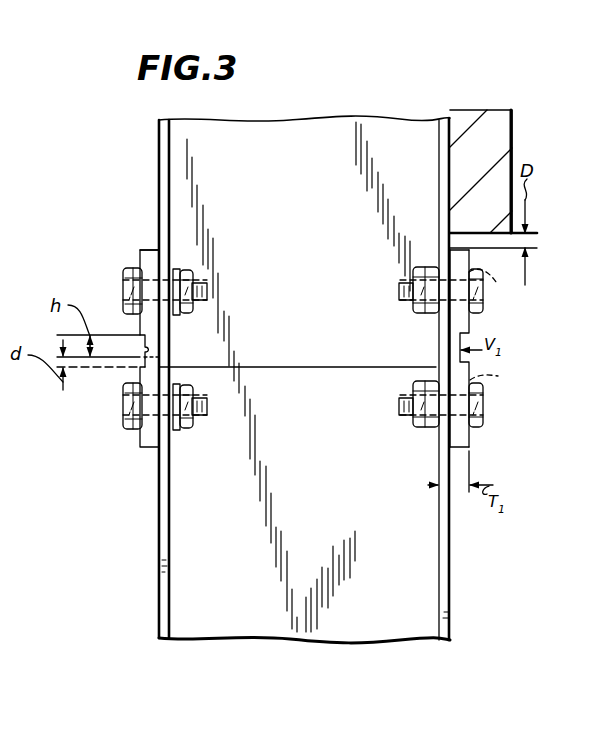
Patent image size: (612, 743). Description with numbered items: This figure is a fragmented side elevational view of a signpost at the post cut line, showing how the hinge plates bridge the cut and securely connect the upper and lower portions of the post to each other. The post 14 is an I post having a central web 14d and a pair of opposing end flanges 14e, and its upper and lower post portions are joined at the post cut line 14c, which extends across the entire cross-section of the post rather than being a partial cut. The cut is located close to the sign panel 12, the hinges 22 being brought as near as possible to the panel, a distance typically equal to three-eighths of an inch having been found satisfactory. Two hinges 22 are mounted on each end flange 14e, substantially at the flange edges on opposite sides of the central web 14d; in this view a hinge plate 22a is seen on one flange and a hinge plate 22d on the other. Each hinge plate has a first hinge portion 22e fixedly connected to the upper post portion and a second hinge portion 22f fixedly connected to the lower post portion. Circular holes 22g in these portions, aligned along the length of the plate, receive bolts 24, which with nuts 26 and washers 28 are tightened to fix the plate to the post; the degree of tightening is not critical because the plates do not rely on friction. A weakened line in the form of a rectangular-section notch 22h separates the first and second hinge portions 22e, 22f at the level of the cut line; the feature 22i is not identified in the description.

The sign panel 12 is at (463, 113).
The post 14 is at (343, 640).
The post cut line 14c is at (283, 367).
The central web 14d is at (388, 627).
The end flange 14e is at (160, 530).
The hinge 22 is at (271, 325).
The hinge plate 22a is at (473, 435).
The hinge plate 22d is at (138, 250).
The first hinge portion 22e is at (150, 249).
The second hinge portion 22f is at (150, 448).
The circular hole 22g is at (503, 329).
The notch 22h is at (144, 347).
The recess 22i is at (150, 357).
The bolt 24 is at (118, 290).
The nut 26 is at (195, 277).
The washer 28 is at (172, 265).